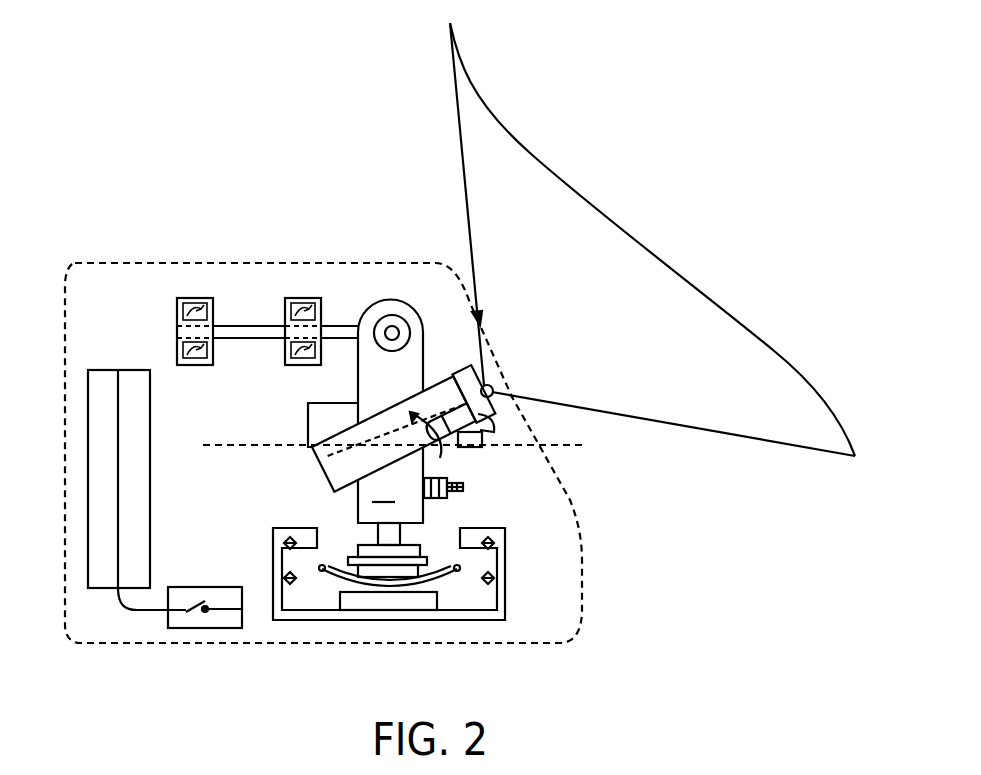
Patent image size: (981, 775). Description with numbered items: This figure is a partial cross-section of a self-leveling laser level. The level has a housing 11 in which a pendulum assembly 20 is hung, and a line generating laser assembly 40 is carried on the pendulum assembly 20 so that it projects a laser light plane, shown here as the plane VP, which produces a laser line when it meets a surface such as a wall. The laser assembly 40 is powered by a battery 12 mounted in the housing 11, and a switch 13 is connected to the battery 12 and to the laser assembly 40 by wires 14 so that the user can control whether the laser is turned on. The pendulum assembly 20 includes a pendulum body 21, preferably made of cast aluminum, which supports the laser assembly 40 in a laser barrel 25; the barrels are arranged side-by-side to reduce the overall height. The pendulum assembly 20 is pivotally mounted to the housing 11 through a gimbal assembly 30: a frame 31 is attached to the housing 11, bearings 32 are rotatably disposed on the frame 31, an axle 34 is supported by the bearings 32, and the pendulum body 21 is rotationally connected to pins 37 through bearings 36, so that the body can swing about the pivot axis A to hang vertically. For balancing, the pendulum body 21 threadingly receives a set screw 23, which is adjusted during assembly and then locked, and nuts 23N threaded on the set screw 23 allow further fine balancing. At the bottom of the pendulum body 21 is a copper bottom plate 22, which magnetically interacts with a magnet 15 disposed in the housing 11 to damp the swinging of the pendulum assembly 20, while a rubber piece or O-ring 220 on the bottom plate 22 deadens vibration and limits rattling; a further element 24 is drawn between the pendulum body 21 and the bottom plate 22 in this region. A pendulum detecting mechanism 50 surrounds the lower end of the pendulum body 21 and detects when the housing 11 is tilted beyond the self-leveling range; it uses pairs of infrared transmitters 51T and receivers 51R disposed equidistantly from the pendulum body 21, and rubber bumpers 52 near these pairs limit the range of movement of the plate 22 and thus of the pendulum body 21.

The housing 11 is at (170, 646).
The battery 12 is at (103, 478).
The switch 13 is at (203, 628).
The wires 14 is at (137, 610).
The magnet 15 is at (407, 603).
The pendulum assembly 20 is at (290, 452).
The pendulum body 21 is at (390, 427).
The bottom plate 22 is at (388, 587).
The rubber piece or O-ring 220 is at (322, 565).
The set screw 23 is at (466, 487).
The nuts 23N is at (443, 499).
The pedestal 24 is at (425, 560).
The laser barrel 25 is at (438, 455).
The gimbal assembly 30 is at (343, 316).
The frame 31 is at (196, 298).
The bearings 32 is at (177, 311).
The axle 34 is at (250, 325).
The bearings 36 is at (391, 318).
The pins 37 is at (398, 316).
The line generating laser assembly 40 is at (359, 451).
The pendulum detecting mechanism 50 is at (307, 581).
The infrared transmitter 51T is at (478, 544).
The infrared receiver 51R is at (489, 578).
The rubber bumpers 52 is at (283, 545).
The pivot axis A is at (494, 415).
The vertical plane VP is at (636, 268).